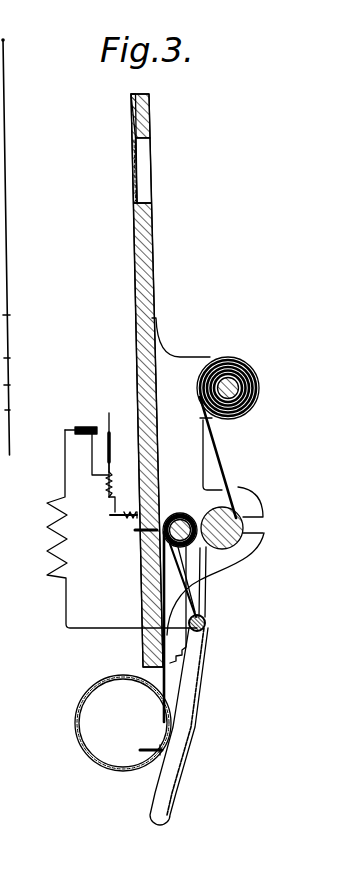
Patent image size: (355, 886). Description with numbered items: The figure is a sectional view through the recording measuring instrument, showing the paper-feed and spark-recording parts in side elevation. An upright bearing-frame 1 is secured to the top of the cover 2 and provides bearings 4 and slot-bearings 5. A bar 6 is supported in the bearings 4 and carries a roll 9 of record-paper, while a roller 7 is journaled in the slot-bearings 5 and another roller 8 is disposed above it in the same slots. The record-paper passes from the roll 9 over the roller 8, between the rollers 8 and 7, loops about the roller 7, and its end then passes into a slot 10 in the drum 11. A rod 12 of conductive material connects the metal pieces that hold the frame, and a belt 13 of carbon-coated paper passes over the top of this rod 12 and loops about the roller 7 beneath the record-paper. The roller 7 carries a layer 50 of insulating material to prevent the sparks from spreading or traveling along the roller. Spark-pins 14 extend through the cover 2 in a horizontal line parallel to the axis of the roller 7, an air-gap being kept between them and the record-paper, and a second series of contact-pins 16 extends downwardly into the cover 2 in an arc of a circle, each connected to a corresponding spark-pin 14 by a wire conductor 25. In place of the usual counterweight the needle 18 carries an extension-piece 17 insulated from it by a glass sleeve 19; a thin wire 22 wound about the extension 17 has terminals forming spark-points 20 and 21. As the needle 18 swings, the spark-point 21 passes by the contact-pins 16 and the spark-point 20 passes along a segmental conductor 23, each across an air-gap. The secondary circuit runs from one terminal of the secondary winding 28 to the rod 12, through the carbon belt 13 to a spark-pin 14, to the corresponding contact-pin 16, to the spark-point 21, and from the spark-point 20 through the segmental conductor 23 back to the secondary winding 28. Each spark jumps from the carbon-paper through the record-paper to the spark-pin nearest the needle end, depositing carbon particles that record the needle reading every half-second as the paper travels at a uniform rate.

The bearing-frame 1 is at (165, 362).
The cover 2 is at (149, 249).
The bearings 4 is at (210, 357).
The slot-bearings 5 is at (263, 528).
The bar 6 is at (254, 378).
The roller 7 is at (182, 512).
The roller 8 is at (233, 514).
The roll of record-paper 9 is at (249, 402).
The slot 10 is at (158, 755).
The drum 11 is at (80, 753).
The rod 12 is at (206, 622).
The belt 13 is at (198, 704).
The spark-pins 14 is at (137, 535).
The contact-pins 16 is at (125, 519).
The extension-piece 17 is at (112, 470).
The needle 18 is at (108, 414).
The glass sleeve 19 is at (112, 445).
The spark-point 20 is at (108, 500).
The spark-point 21 is at (108, 516).
The thin wire 22 is at (113, 488).
The segmental conductor 23 is at (92, 457).
The wire conductors 25 is at (128, 533).
The secondary winding 28 is at (47, 556).
The layer of insulating material 50 is at (189, 513).